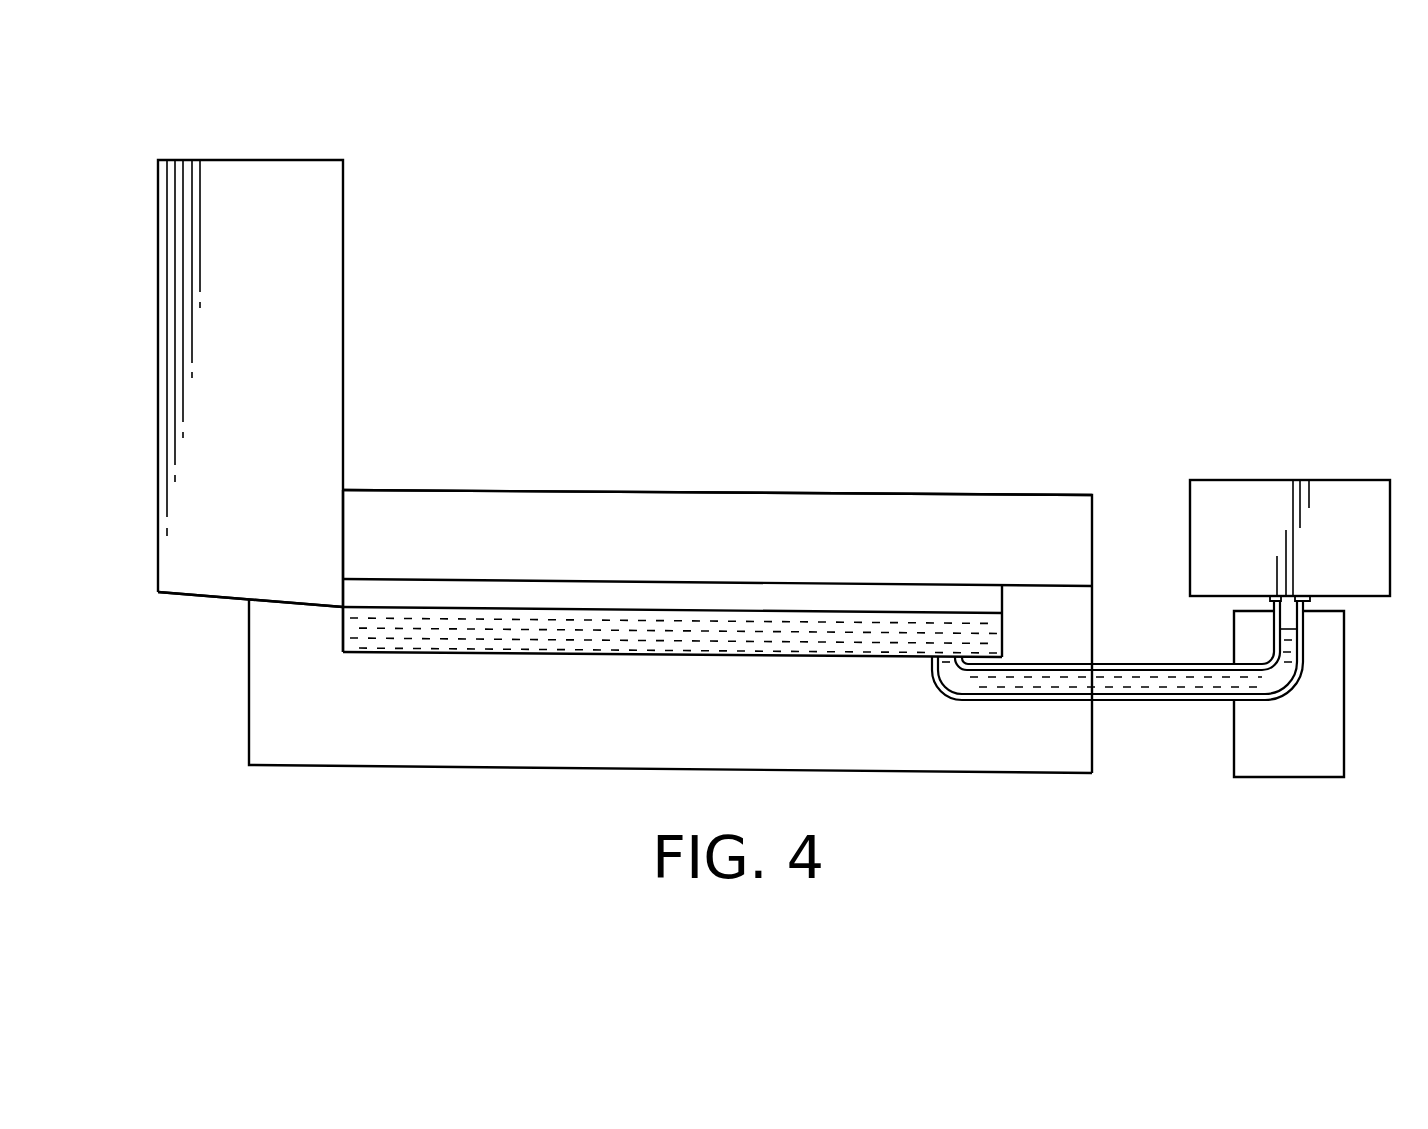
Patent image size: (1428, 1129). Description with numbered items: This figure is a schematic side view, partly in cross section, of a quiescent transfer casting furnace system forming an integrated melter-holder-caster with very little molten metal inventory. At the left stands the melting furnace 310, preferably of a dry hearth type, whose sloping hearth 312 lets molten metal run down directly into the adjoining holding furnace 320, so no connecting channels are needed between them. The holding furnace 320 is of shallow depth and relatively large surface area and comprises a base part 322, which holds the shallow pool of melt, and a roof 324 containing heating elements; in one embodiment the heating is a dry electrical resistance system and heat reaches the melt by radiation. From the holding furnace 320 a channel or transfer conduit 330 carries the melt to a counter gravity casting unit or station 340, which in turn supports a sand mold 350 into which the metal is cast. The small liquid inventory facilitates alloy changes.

The melting furnace 310 is at (297, 160).
The sloping hearth 312 is at (191, 592).
The holding furnace 320 is at (560, 490).
The base part 322 is at (482, 752).
The roof 324 is at (768, 510).
The transfer conduit 330 is at (1123, 705).
The counter gravity casting station 340 is at (1312, 785).
The sand mold 350 is at (1280, 478).